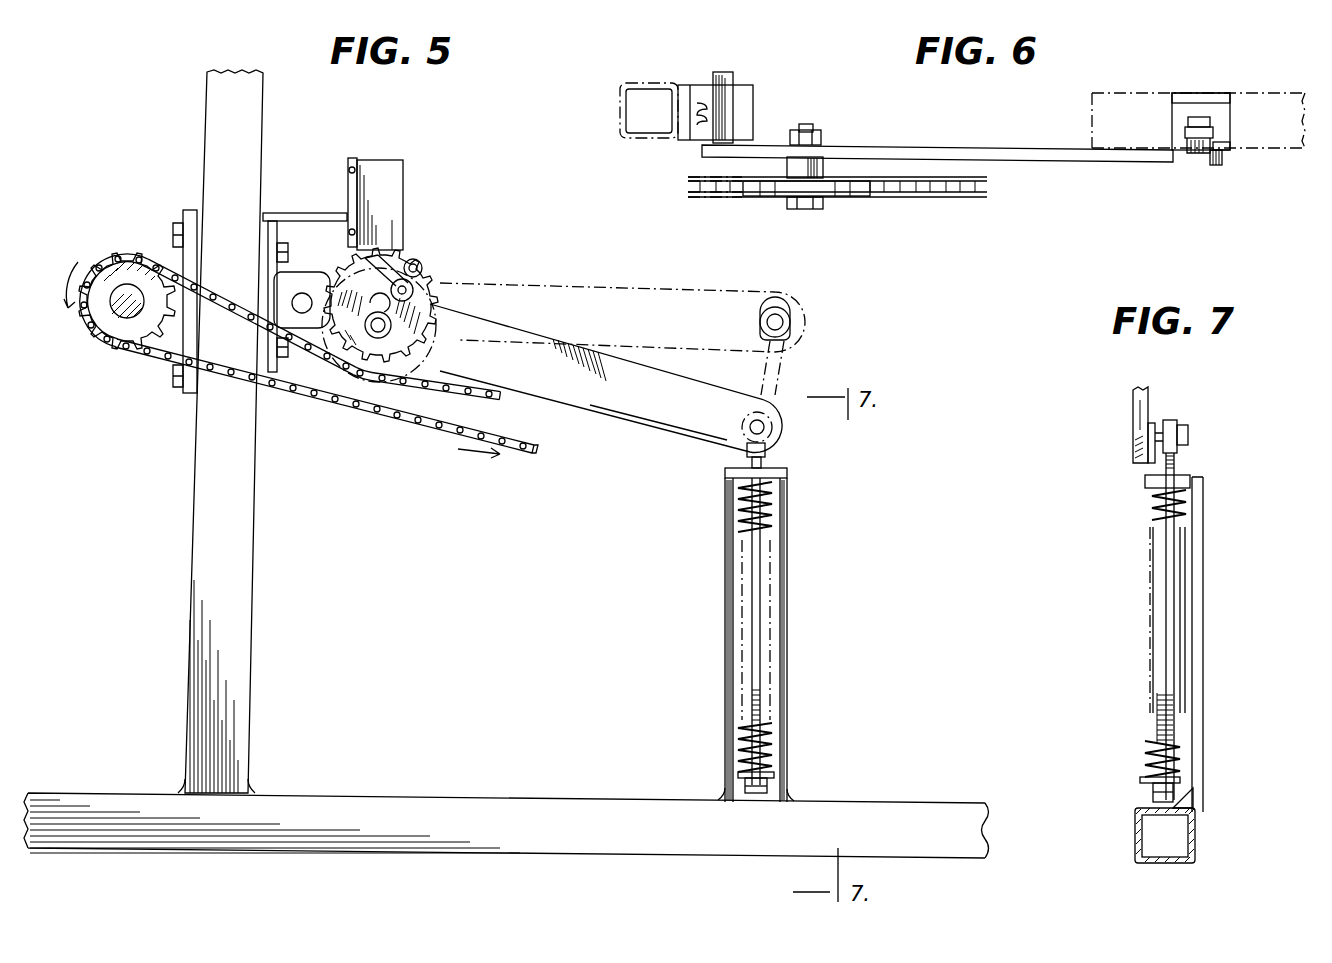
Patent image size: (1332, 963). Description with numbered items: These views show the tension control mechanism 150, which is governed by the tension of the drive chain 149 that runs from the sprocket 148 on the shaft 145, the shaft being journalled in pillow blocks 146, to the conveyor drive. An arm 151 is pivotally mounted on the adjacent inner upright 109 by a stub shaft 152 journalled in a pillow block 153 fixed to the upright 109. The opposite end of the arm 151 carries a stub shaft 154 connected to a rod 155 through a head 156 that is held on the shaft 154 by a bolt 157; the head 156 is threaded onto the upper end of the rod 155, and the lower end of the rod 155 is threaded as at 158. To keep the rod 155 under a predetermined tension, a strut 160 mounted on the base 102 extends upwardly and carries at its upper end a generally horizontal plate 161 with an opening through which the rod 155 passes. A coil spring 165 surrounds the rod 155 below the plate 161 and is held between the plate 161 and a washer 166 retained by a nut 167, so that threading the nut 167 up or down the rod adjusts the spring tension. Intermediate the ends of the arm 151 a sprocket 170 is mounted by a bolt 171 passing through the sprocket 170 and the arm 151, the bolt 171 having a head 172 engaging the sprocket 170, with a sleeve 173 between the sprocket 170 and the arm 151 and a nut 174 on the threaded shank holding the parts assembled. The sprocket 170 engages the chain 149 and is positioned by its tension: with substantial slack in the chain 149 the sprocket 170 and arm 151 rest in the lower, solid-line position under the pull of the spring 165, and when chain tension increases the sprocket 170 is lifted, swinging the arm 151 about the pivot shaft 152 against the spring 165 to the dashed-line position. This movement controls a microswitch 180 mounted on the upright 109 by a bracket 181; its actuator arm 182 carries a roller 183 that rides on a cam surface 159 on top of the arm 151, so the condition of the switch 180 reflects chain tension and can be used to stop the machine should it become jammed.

In FIG. 5, the base 102 is at (400, 812).
In FIG. 6, the base 102 is at (1110, 92).
In FIG. 7, the base 102 is at (1135, 848).
In FIG. 5, the inner upright 109 is at (240, 505).
In FIG. 6, the inner upright 109 is at (650, 83).
In FIG. 5, the shaft 145 is at (115, 318).
In FIG. 5, the pillow blocks 146 is at (172, 258).
In FIG. 5, the sprocket 148 is at (110, 278).
In FIG. 5, the chain 149 is at (150, 357).
In FIG. 6, the chain 149 is at (697, 178).
In FIG. 5, the tension control mechanism 150 is at (503, 267).
In FIG. 5, the arm 151 is at (615, 298).
In FIG. 6, the arm 151 is at (918, 150).
In FIG. 7, the arm 151 is at (1135, 403).
In FIG. 5, the stub shaft 152 is at (302, 293).
In FIG. 6, the stub shaft 152 is at (735, 75).
In FIG. 5, the pillow block 153 is at (272, 292).
In FIG. 6, the pillow block 153 is at (755, 120).
In FIG. 6, the stub shaft 154 is at (1228, 144).
In FIG. 7, the stub shaft 154 is at (1153, 425).
In FIG. 5, the rod 155 is at (782, 375).
In FIG. 7, the rod 155 is at (1165, 558).
In FIG. 5, the head 156 is at (795, 318).
In FIG. 6, the head 156 is at (1195, 128).
In FIG. 7, the head 156 is at (1178, 420).
In FIG. 6, the bolt 157 is at (1190, 120).
In FIG. 7, the bolt 157 is at (1190, 432).
In FIG. 7, the threaded lower end 158 is at (1172, 725).
In FIG. 5, the cam surface 159 is at (583, 284).
In FIG. 5, the strut 160 is at (778, 612).
In FIG. 6, the strut 160 is at (1188, 93).
In FIG. 7, the strut 160 is at (1198, 628).
In FIG. 5, the horizontal plate 161 is at (780, 476).
In FIG. 6, the horizontal plate 161 is at (1220, 118).
In FIG. 7, the horizontal plate 161 is at (1185, 478).
In FIG. 5, the coil spring 165 is at (782, 508).
In FIG. 7, the coil spring 165 is at (1150, 505).
In FIG. 5, the washer 166 is at (770, 770).
In FIG. 7, the washer 166 is at (1185, 782).
In FIG. 5, the nut 167 is at (768, 781).
In FIG. 7, the nut 167 is at (1177, 790).
In FIG. 5, the sprocket 170 is at (428, 283).
In FIG. 6, the sprocket 170 is at (752, 196).
In FIG. 6, the bolt 171 is at (808, 124).
In FIG. 5, the head 172 is at (392, 322).
In FIG. 6, the head 172 is at (810, 209).
In FIG. 6, the sleeve 173 is at (825, 170).
In FIG. 6, the lock nut 174 is at (822, 138).
In FIG. 5, the microswitch 180 is at (384, 172).
In FIG. 5, the bracket 181 is at (300, 213).
In FIG. 5, the actuator arm 182 is at (393, 258).
In FIG. 5, the roller 183 is at (418, 260).